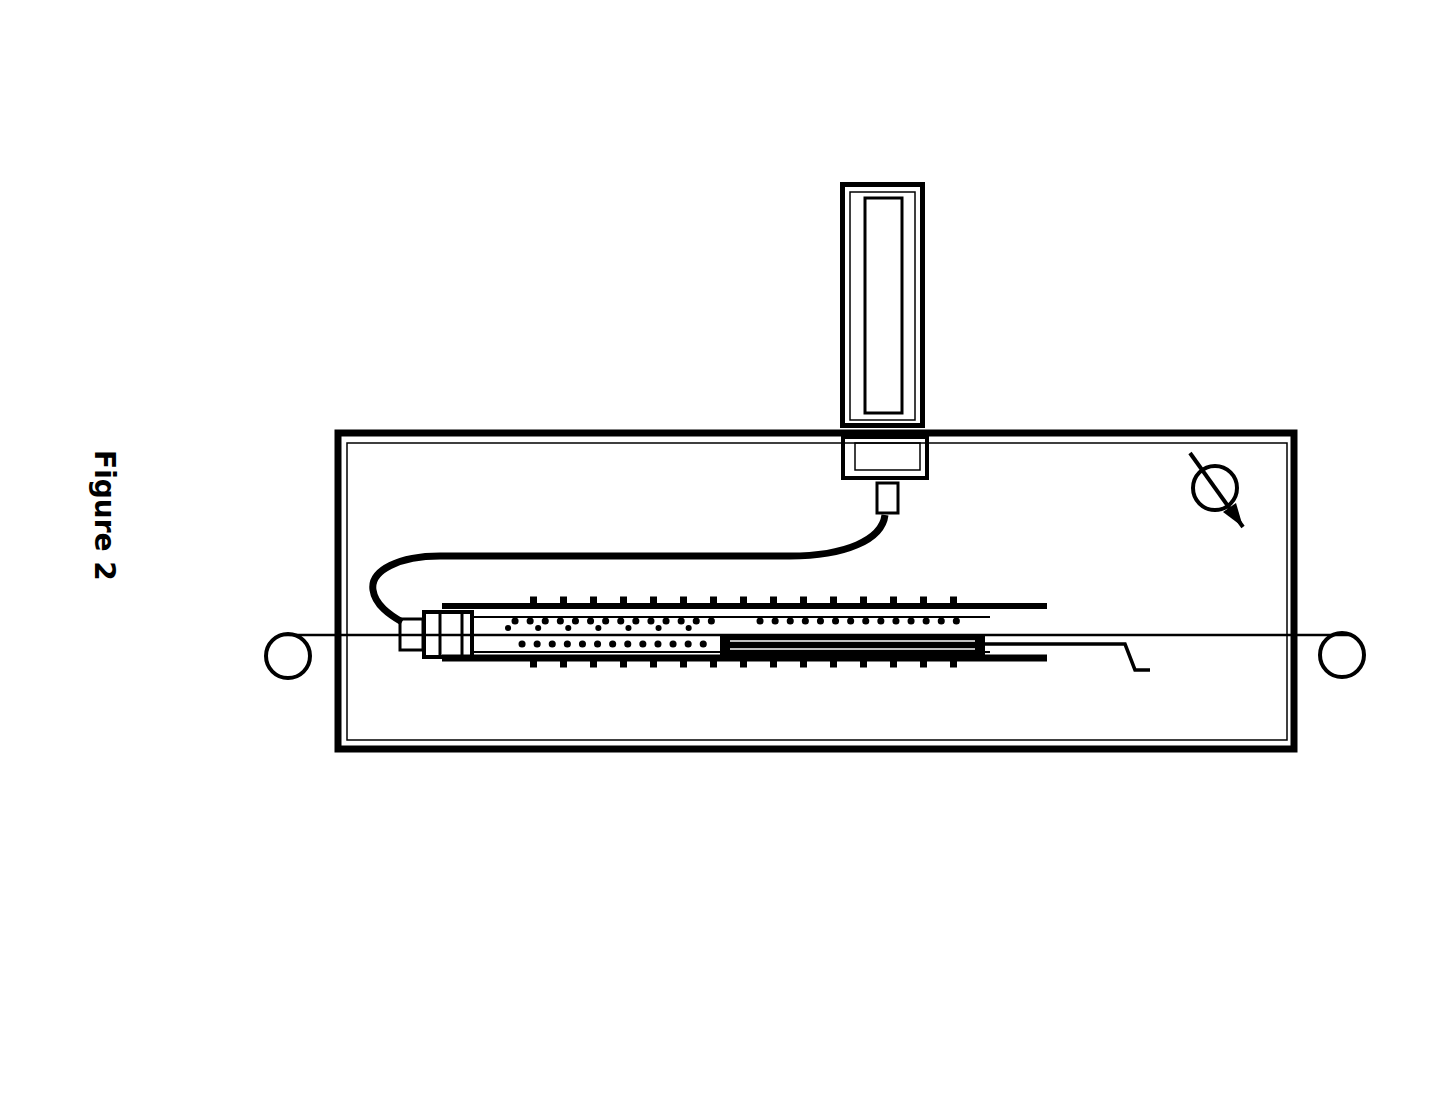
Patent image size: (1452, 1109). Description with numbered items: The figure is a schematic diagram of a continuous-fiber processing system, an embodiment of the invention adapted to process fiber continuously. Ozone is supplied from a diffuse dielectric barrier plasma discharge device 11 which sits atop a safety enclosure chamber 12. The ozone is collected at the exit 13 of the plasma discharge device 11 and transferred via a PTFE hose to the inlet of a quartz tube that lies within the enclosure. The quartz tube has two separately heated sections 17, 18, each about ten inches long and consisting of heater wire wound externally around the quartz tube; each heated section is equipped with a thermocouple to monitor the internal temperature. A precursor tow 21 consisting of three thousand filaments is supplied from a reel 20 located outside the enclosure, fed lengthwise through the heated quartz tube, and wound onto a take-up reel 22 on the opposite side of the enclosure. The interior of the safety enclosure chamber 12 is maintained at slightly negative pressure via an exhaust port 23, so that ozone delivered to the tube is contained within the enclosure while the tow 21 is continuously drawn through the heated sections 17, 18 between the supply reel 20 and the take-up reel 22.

The safety enclosure chamber 12 is at (432, 428).
The diffuse dielectric barrier plasma discharge device 11 is at (840, 275).
The exit 13 is at (842, 440).
The precursor tow 21 is at (318, 636).
The reel 20 is at (288, 660).
The take-up reel 22 is at (1343, 633).
The exhaust port 23 is at (1233, 467).
The heated section 17 is at (602, 665).
The heated section 18 is at (830, 663).